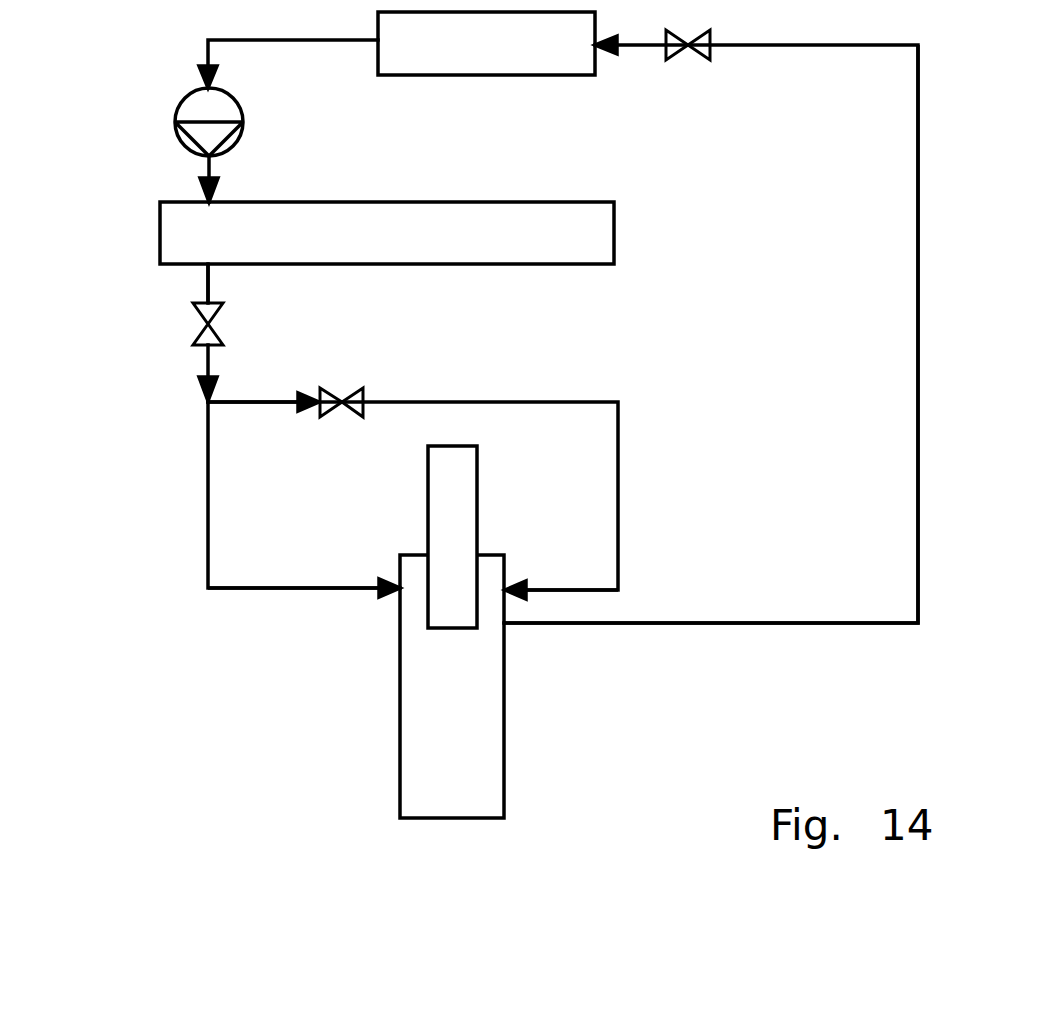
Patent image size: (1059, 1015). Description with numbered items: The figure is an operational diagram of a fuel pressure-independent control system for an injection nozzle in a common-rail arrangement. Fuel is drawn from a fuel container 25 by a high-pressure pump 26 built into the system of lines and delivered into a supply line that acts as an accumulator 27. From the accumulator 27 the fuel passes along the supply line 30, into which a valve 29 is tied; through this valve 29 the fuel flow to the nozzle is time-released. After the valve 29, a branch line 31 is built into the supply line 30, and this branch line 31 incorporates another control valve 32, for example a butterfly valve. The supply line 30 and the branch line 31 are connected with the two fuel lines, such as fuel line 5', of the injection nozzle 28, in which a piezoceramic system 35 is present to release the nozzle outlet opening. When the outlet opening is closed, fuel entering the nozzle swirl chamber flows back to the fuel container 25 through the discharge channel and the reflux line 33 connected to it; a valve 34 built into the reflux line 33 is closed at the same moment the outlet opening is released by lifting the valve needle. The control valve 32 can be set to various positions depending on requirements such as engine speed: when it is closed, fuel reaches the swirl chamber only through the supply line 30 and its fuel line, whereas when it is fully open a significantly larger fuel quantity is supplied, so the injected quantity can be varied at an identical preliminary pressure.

The fuel container 25 is at (582, 63).
The high-pressure pump 26 is at (210, 100).
The accumulator 27 is at (593, 247).
The injection nozzle 28 is at (480, 797).
The valve 29 is at (196, 335).
The supply line 30 is at (208, 282).
The branch line 31 is at (247, 398).
The control valve 32 is at (325, 418).
The reflux line 33 is at (687, 623).
The valve 34 is at (705, 55).
The piezoceramic system 35 is at (440, 465).
The fuel line 5' is at (561, 549).